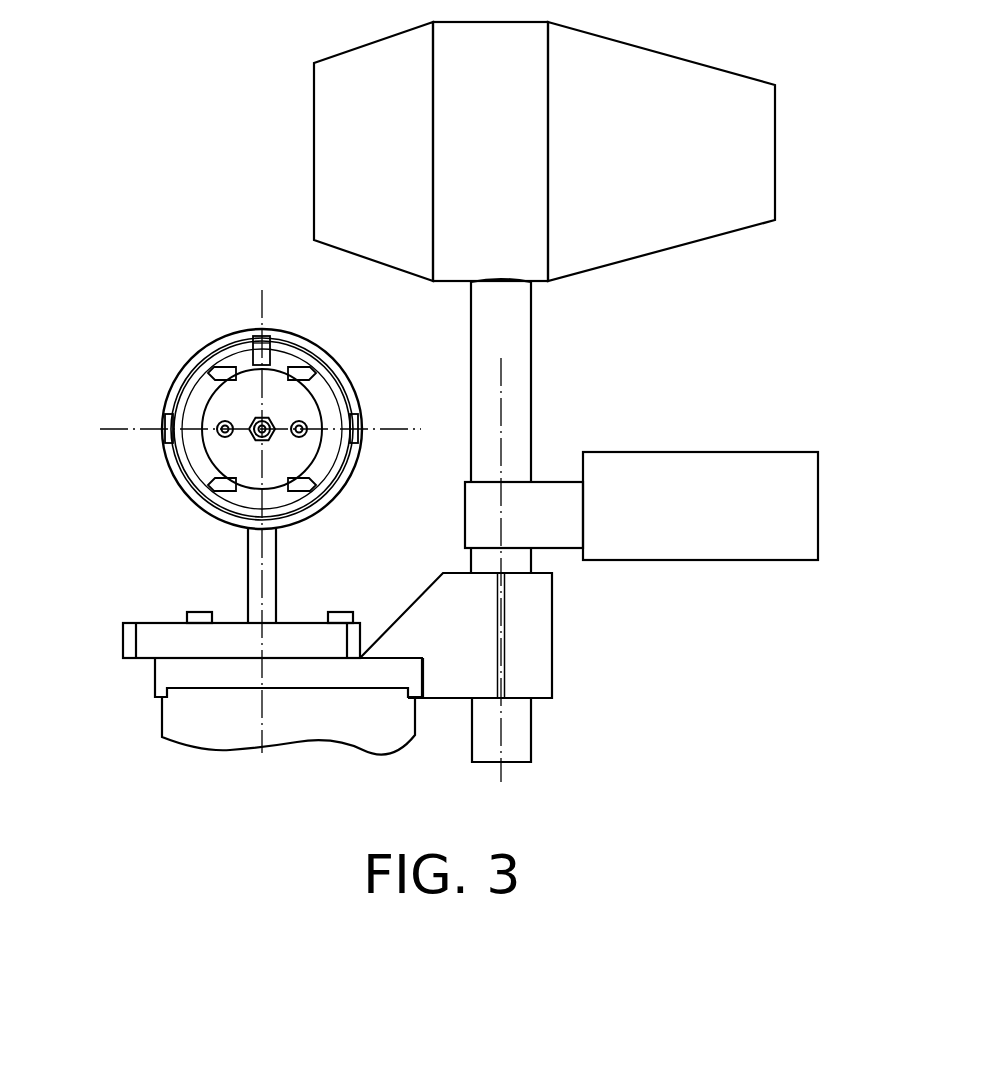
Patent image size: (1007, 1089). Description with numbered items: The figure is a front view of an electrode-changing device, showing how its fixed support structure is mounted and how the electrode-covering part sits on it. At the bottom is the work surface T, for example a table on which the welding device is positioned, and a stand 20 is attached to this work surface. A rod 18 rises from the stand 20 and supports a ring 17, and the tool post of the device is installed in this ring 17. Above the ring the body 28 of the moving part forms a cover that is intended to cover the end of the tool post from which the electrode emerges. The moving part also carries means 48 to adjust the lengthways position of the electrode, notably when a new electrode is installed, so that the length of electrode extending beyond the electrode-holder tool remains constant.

The ring 17 is at (245, 338).
The body 28 is at (243, 362).
The means to adjust the lengthways position of the electrode 48 is at (272, 420).
The rod 18 is at (253, 566).
The stand 20 is at (140, 622).
The work surface T is at (220, 730).